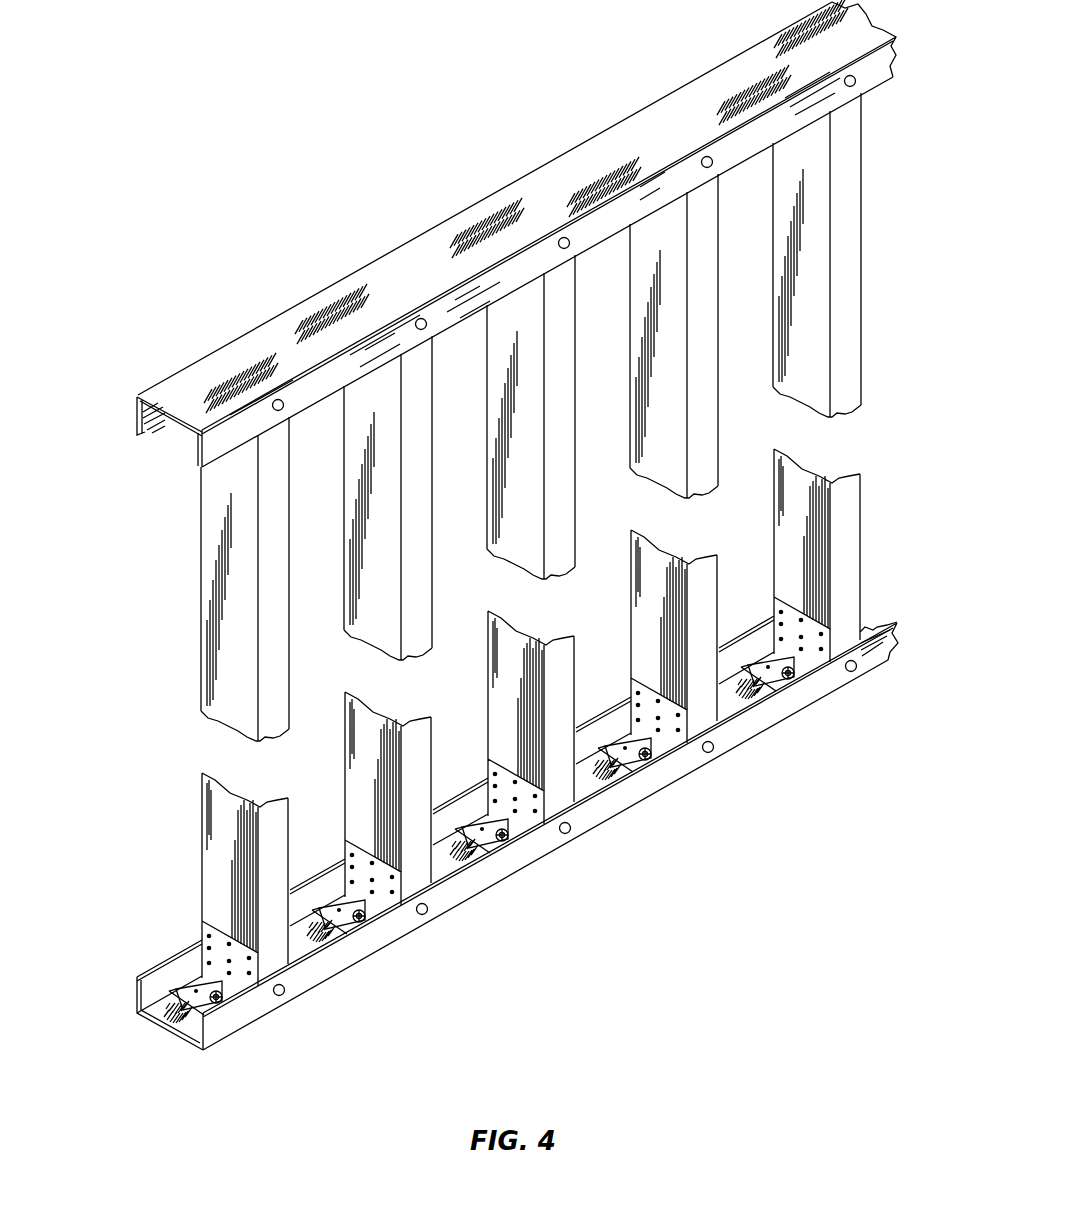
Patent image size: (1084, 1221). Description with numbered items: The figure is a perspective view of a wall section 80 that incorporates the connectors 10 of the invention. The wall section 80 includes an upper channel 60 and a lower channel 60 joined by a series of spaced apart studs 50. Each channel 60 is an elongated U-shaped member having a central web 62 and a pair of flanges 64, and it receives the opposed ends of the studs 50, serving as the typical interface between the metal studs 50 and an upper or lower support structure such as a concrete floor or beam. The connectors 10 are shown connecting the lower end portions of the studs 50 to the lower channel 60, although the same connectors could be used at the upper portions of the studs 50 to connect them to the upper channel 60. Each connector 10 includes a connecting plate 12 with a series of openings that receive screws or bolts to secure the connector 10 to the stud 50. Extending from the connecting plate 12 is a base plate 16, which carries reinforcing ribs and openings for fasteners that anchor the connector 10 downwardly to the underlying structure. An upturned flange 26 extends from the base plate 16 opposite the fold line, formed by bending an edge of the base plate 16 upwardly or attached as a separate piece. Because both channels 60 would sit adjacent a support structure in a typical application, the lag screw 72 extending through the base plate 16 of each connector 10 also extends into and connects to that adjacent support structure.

The connector 10 is at (468, 803).
The connecting plate 12 is at (380, 888).
The base plate 16 is at (340, 902).
The upturned flange 26 is at (335, 930).
The stud 50 is at (868, 278).
The channel 60 is at (517, 833).
The central web 62 is at (395, 268).
The flange 64 is at (367, 938).
The lag screw 72 is at (507, 837).
The wall section 80 is at (417, 175).